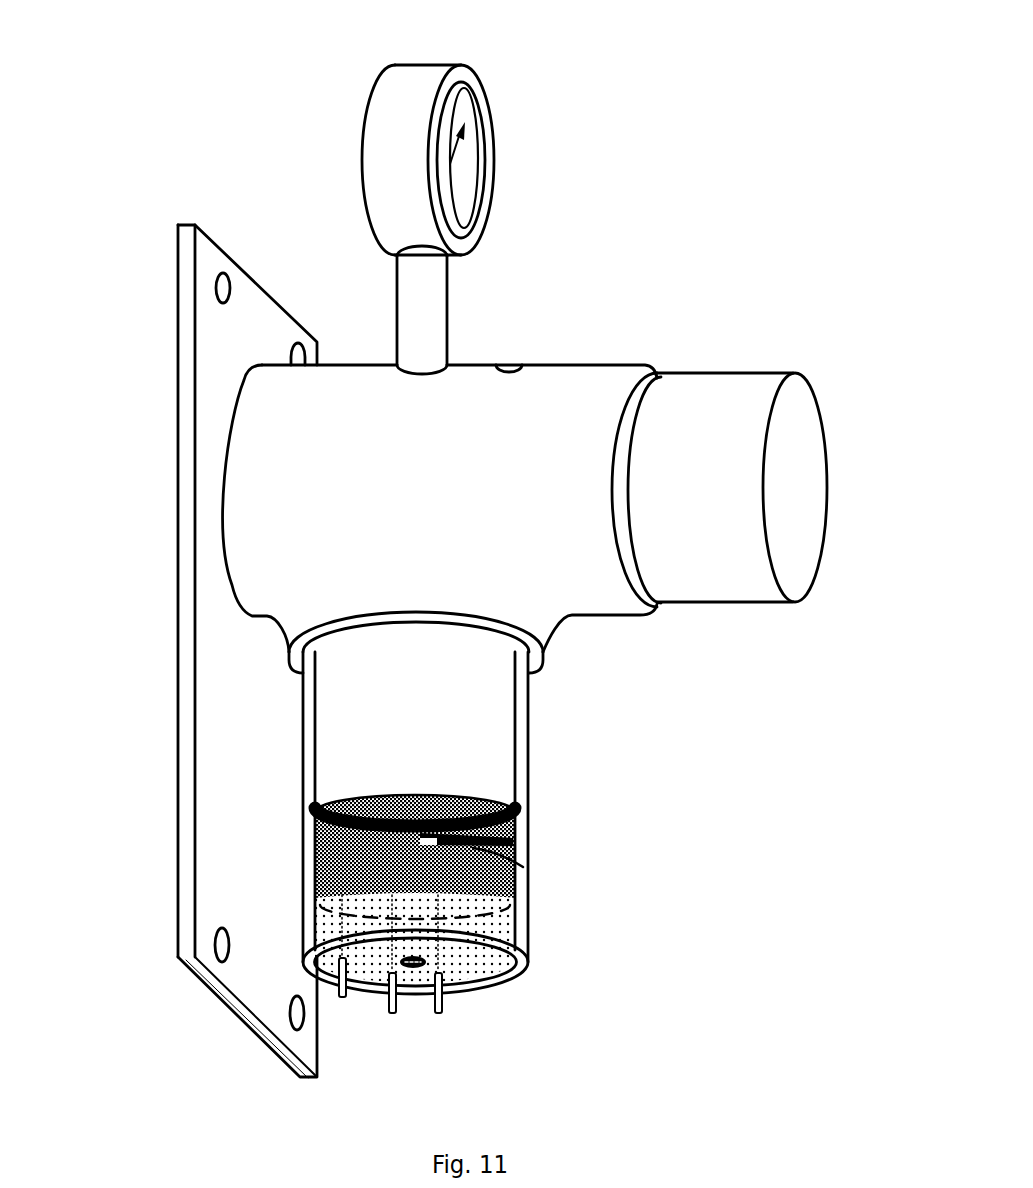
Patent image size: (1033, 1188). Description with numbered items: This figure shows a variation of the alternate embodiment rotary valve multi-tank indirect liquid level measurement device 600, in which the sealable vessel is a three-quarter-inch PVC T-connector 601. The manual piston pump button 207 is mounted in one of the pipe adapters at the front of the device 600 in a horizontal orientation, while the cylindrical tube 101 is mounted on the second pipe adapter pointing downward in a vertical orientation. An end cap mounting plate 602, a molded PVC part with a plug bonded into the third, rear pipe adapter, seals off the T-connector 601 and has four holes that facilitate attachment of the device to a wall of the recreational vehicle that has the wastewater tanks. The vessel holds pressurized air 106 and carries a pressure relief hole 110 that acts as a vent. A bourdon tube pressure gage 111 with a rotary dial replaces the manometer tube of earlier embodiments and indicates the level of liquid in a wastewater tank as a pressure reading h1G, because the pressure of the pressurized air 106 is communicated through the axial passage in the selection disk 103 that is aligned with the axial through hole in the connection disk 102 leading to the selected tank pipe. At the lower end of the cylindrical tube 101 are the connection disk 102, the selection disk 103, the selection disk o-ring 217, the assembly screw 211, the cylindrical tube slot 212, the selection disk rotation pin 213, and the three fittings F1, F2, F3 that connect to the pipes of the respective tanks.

The rotary valve multi-tank indirect liquid level measurement device 600 is at (71, 50).
The end cap mounting plate 602 is at (217, 660).
The T-connector 601 is at (593, 365).
The pressure relief hole 110 is at (503, 365).
The pump button 207 is at (737, 373).
The bourdon tube pressure gage 111 is at (391, 203).
The bourdon tube pressure gage reading h1G is at (462, 153).
The cylindrical tube 101 is at (531, 738).
The pressurized air 106 is at (478, 688).
The connection disk 102 is at (473, 972).
The selection disk 103 is at (313, 878).
The cylindrical tube slot 212 is at (524, 840).
The selection disk o-ring 217 is at (313, 826).
The selection disk rotation pin 213 is at (530, 870).
The assembly screw 211 is at (528, 965).
The first fitting F1 is at (441, 1014).
The second fitting F2 is at (395, 1014).
The third fitting F3 is at (345, 998).